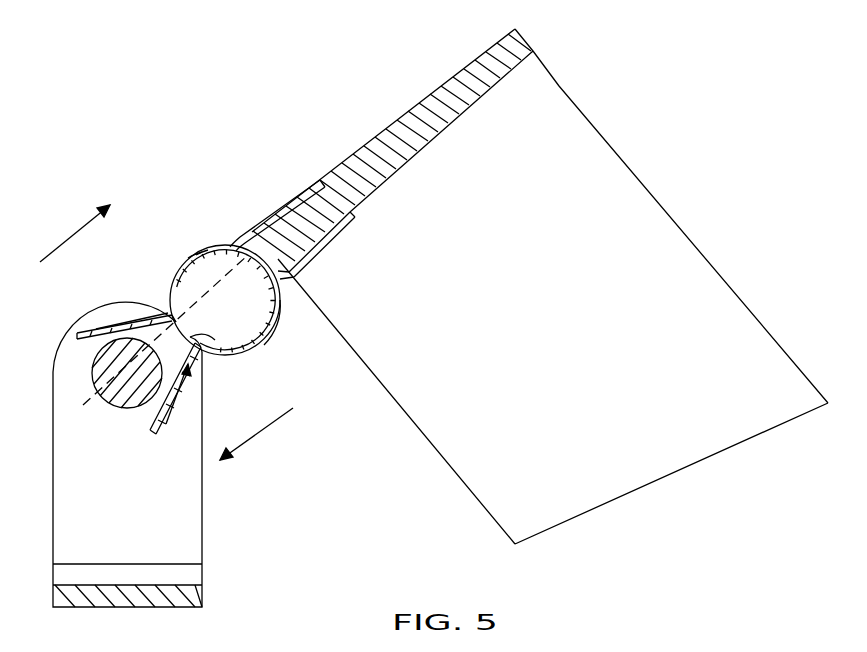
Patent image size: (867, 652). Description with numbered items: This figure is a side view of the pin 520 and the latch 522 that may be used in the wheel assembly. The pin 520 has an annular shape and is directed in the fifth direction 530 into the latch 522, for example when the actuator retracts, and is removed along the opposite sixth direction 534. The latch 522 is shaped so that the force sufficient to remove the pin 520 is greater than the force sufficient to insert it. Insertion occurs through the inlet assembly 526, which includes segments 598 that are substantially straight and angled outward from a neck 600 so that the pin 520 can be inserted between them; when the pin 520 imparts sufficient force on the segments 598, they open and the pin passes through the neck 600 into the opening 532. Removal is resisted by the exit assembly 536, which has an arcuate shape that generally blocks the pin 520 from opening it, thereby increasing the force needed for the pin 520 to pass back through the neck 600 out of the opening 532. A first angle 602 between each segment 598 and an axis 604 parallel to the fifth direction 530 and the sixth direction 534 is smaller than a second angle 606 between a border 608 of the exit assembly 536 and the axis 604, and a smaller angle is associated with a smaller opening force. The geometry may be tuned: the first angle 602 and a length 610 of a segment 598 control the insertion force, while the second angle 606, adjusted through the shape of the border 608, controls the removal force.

The pin 520 is at (58, 362).
The latch 522 is at (285, 120).
The inlet assembly 526 is at (172, 318).
The fifth direction 530 is at (70, 232).
The opening 532 is at (232, 242).
The sixth direction 534 is at (262, 450).
The exit assembly 536 is at (190, 337).
The segments 598 is at (100, 332).
The neck 600 is at (205, 346).
The first angle 602 is at (128, 322).
The axis 604 is at (264, 311).
The second angle 606 is at (195, 255).
The border 608 is at (187, 258).
The length 610 is at (166, 425).